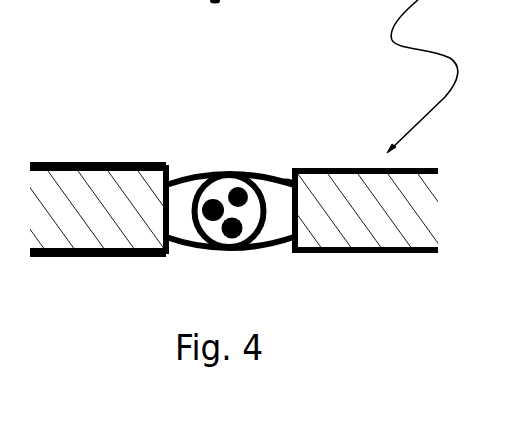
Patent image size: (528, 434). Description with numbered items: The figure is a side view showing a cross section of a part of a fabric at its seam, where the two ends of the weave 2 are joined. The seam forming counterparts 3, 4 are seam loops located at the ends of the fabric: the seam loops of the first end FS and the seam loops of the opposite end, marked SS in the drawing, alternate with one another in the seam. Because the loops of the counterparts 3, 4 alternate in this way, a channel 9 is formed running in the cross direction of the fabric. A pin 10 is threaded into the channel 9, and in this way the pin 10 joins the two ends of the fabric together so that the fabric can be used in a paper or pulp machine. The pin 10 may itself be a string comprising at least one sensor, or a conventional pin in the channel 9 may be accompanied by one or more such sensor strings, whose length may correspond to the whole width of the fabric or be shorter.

The weave 2 is at (108, 185).
The seam forming counterpart 3 is at (197, 175).
The seam forming counterpart 4 is at (282, 178).
The channel 9 is at (224, 190).
The pin 10 is at (210, 200).
The first end FS is at (55, 165).
The rear side SS is at (70, 255).